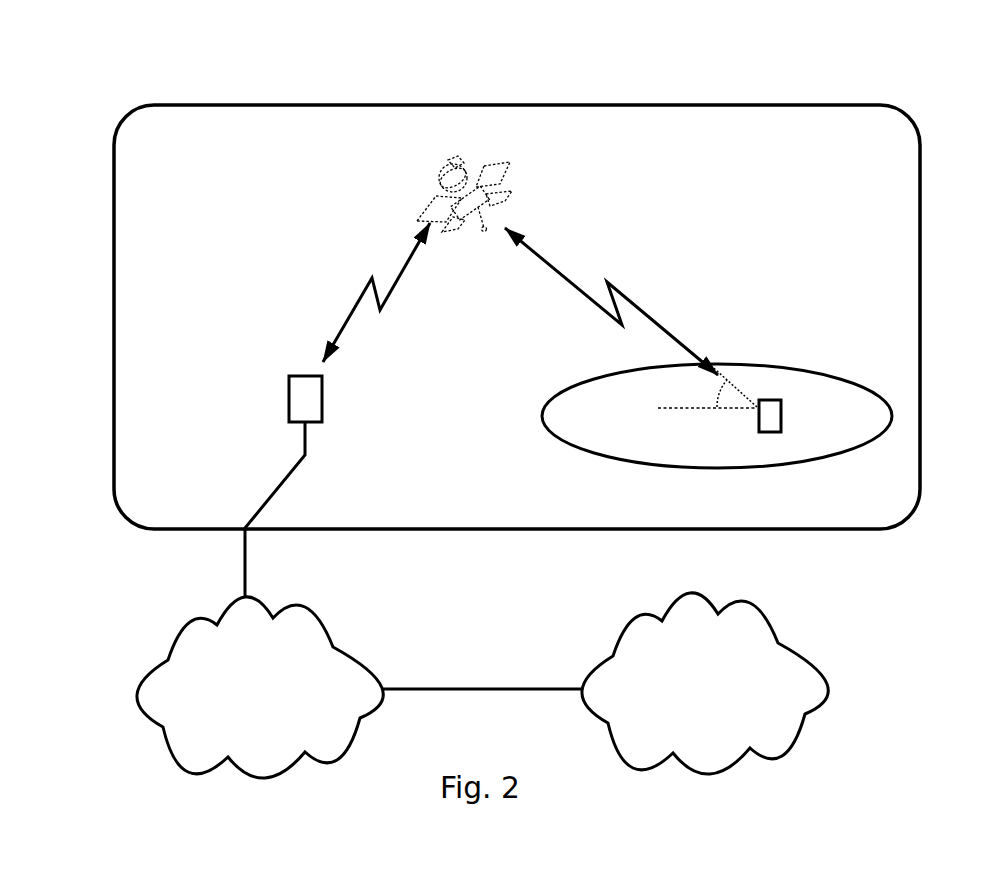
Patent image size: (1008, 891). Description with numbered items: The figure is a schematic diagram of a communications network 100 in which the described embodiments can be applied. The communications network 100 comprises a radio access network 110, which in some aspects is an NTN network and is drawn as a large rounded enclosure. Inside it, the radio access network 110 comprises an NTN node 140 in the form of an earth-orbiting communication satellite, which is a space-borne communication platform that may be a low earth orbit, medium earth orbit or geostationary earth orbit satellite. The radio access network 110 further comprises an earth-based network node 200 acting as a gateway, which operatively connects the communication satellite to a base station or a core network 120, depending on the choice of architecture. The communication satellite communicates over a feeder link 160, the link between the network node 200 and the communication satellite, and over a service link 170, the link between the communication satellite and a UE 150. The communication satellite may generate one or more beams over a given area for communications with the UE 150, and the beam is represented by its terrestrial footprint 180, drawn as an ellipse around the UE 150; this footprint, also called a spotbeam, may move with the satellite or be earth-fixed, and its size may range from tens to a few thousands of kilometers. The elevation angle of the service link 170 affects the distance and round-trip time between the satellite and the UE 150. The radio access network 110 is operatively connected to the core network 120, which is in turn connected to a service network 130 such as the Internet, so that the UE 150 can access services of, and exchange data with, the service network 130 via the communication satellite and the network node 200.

The communications network 100 is at (205, 78).
The radio access network 110 is at (113, 355).
The core network 120 is at (274, 700).
The service network 130 is at (734, 705).
The NTN node 140 is at (463, 185).
The UE 150 is at (770, 400).
The feeder link 160 is at (345, 317).
The service link 170 is at (635, 302).
The terrestrial footprint 180 is at (543, 418).
The network node 200 is at (300, 400).